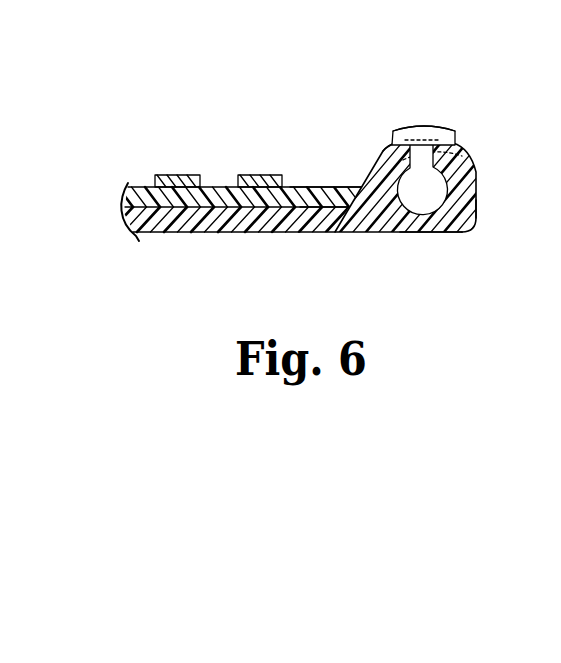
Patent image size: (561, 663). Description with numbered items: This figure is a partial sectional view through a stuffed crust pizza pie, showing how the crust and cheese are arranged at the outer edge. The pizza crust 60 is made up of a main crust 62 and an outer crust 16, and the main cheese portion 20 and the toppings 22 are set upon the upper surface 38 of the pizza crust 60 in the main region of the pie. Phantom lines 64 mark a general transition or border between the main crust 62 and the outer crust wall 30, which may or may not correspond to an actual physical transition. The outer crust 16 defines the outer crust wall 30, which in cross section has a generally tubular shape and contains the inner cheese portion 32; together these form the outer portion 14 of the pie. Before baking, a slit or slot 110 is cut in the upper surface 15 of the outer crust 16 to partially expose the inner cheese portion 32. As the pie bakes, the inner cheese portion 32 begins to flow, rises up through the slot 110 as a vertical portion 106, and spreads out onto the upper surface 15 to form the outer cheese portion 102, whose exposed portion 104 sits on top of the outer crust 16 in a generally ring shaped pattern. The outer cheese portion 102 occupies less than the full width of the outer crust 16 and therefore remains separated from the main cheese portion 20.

The outer portion 14 is at (421, 163).
The upper surface 15 is at (461, 150).
The outer crust 16 is at (443, 218).
The main cheese portion 20 is at (218, 187).
The toppings 22 is at (176, 175).
The outer crust wall 30 is at (470, 228).
The inner cheese portion 32 is at (402, 158).
The upper surface 38 is at (312, 187).
The pizza crust 60 is at (170, 240).
The main crust 62 is at (216, 228).
The phantom lines 64 is at (355, 212).
The outer cheese portion 102 is at (398, 108).
The exposed portion 104 is at (426, 126).
The vertical portion 106 is at (442, 167).
The slot 110 is at (402, 160).